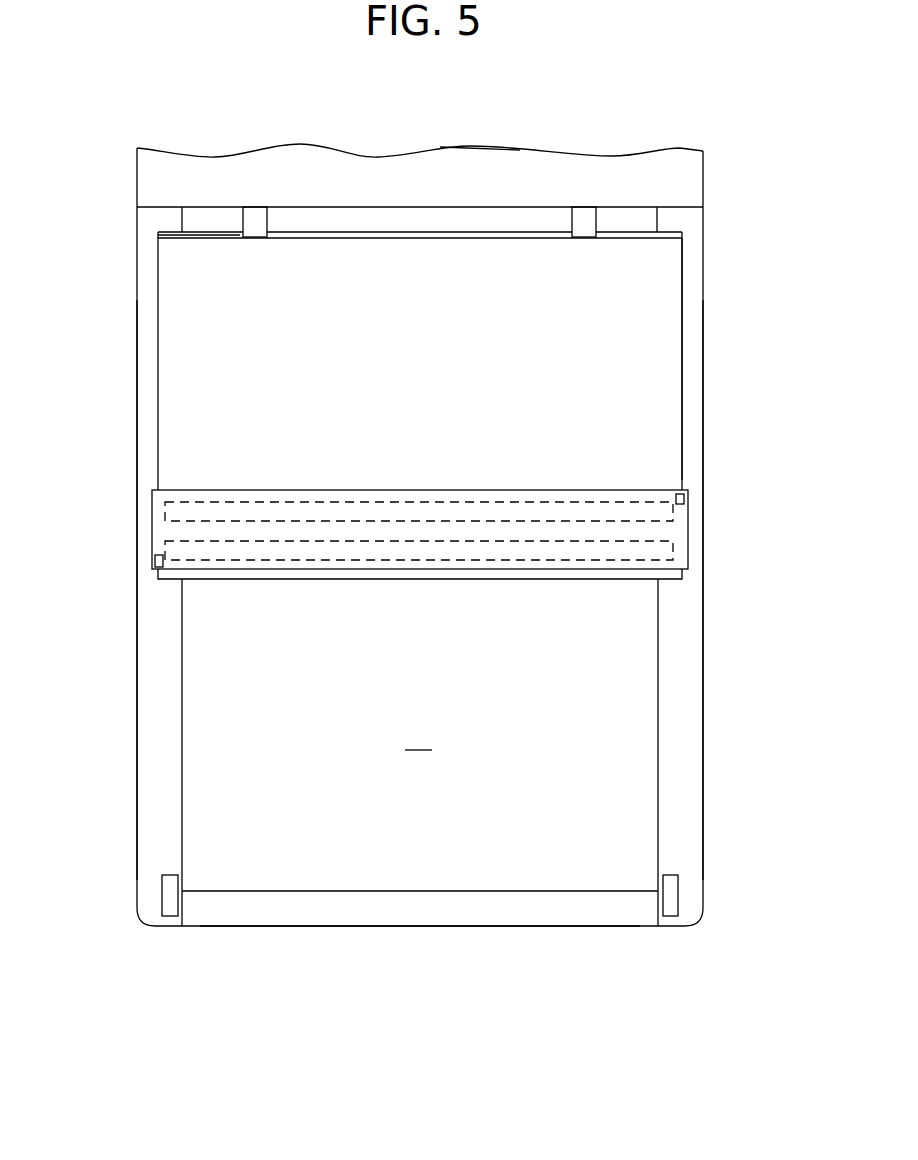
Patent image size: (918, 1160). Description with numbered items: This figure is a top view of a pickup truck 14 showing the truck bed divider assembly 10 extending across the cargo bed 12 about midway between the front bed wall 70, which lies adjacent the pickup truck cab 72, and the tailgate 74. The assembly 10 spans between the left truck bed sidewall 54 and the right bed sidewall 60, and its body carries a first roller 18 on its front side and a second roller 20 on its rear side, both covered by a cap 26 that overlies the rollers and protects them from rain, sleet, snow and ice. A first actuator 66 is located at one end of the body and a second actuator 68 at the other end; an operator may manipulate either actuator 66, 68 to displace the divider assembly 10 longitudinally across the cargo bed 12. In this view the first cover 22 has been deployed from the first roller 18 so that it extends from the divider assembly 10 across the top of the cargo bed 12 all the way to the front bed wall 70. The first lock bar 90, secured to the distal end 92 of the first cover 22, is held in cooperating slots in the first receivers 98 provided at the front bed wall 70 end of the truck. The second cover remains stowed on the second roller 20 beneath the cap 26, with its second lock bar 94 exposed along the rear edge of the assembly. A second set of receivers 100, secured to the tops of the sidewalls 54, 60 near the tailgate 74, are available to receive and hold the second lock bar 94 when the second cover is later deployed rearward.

The truck bed divider assembly 10 is at (616, 462).
The cargo bed 12 is at (245, 793).
The pickup truck 14 is at (152, 187).
The first roller 18 is at (630, 500).
The second roller 20 is at (645, 550).
The first cover 22 is at (585, 343).
The cap 26 is at (428, 533).
The left truck bed sidewall 54 is at (155, 722).
The right bed sidewall 60 is at (680, 759).
The first actuator 66 is at (152, 562).
The second actuator 68 is at (690, 497).
The front bed wall 70 is at (397, 220).
The pickup truck cab 72 is at (513, 175).
The tailgate 74 is at (455, 912).
The first lock bar 90 is at (222, 240).
The distal end 92 is at (667, 262).
The second lock bar 94 is at (607, 580).
The first receivers 98 is at (253, 218).
The second set of receivers 100 is at (167, 900).